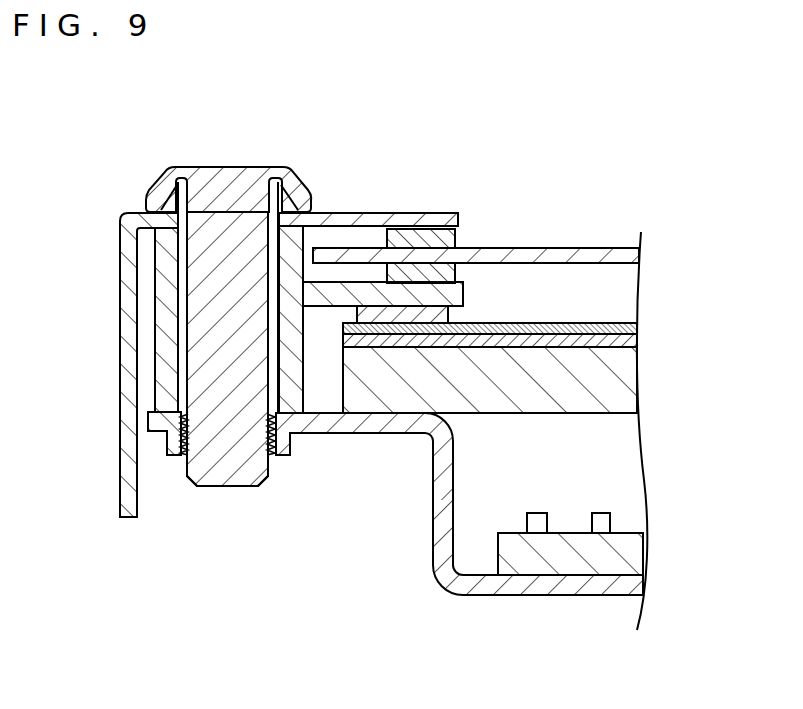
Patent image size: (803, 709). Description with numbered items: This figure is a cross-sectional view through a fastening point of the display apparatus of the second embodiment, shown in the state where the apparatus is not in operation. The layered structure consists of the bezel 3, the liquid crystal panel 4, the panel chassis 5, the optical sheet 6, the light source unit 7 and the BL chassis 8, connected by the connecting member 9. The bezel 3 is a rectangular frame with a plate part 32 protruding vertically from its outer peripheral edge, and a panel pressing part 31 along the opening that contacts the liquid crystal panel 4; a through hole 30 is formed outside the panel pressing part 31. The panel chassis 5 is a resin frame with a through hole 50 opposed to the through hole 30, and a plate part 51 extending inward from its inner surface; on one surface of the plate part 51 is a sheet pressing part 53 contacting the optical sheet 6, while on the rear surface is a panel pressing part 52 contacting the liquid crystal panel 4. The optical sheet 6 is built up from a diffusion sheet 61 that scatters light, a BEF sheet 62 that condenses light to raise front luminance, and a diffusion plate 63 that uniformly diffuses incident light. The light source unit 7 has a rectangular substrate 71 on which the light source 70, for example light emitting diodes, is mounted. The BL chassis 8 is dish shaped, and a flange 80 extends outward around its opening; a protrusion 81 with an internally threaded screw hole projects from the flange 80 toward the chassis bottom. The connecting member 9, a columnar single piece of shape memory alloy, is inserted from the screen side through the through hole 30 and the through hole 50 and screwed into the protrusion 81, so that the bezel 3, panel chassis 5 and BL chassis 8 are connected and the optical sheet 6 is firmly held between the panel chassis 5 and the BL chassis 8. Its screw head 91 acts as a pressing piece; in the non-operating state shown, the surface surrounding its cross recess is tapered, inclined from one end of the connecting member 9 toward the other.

The bezel 3 is at (360, 215).
The liquid crystal panel 4 is at (597, 251).
The panel chassis 5 is at (291, 398).
The optical sheet 6 is at (553, 362).
The light source unit 7 is at (642, 536).
The backlight chassis 8 is at (459, 544).
The connecting member 9 is at (225, 472).
The through hole 30 is at (202, 200).
The panel pressing part 31 is at (433, 247).
The plate part 32 is at (122, 330).
The through hole 50 is at (273, 247).
The plate part 51 is at (462, 297).
The panel pressing part 52 is at (443, 278).
The sheet pressing part 53 is at (450, 315).
The diffusion sheet 61 is at (638, 330).
The BEF sheet 62 is at (638, 343).
The diffusion plate 63 is at (526, 381).
The light source 70 is at (610, 523).
The substrate 71 is at (625, 560).
The flange 80 is at (380, 425).
The protrusion 81 is at (173, 437).
The screw head 91 is at (291, 188).